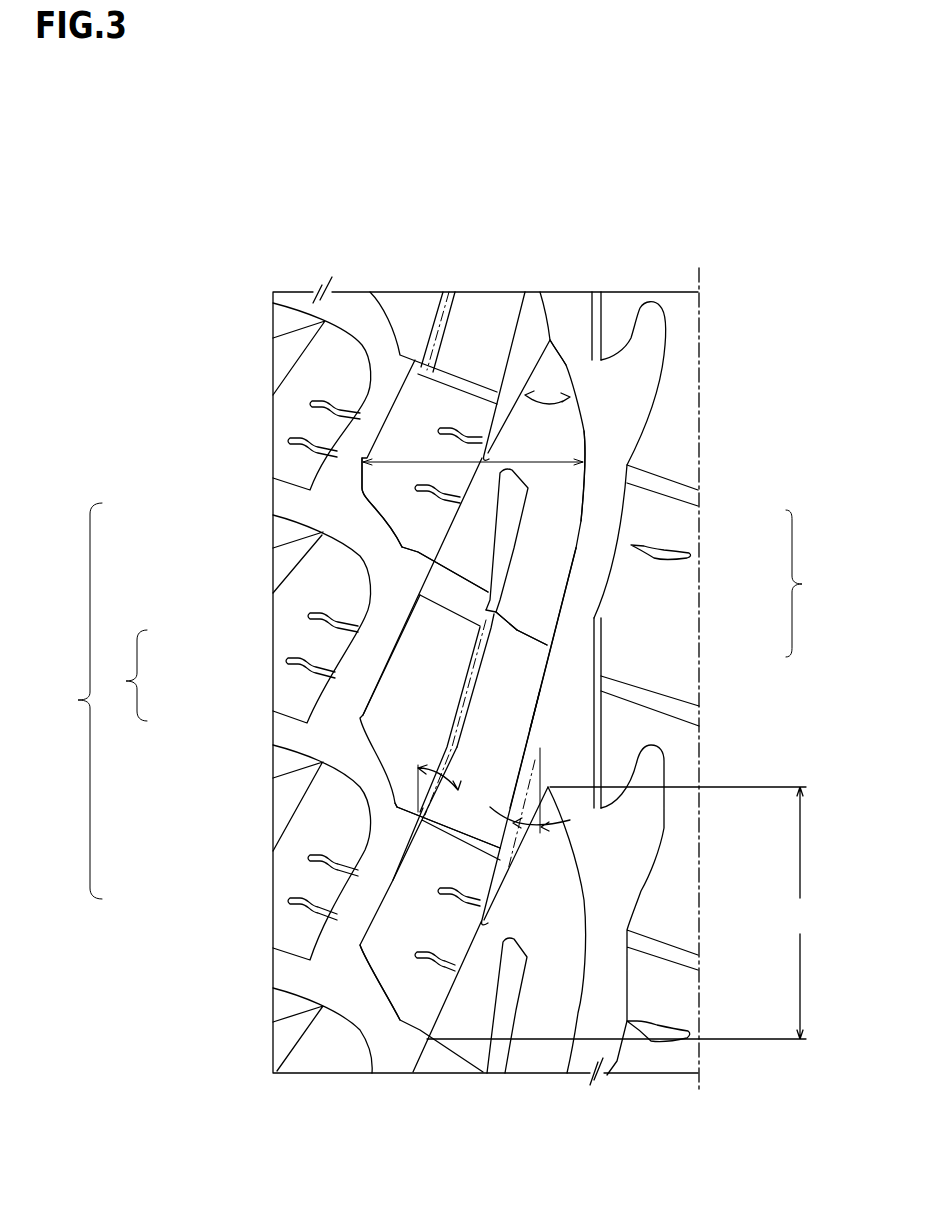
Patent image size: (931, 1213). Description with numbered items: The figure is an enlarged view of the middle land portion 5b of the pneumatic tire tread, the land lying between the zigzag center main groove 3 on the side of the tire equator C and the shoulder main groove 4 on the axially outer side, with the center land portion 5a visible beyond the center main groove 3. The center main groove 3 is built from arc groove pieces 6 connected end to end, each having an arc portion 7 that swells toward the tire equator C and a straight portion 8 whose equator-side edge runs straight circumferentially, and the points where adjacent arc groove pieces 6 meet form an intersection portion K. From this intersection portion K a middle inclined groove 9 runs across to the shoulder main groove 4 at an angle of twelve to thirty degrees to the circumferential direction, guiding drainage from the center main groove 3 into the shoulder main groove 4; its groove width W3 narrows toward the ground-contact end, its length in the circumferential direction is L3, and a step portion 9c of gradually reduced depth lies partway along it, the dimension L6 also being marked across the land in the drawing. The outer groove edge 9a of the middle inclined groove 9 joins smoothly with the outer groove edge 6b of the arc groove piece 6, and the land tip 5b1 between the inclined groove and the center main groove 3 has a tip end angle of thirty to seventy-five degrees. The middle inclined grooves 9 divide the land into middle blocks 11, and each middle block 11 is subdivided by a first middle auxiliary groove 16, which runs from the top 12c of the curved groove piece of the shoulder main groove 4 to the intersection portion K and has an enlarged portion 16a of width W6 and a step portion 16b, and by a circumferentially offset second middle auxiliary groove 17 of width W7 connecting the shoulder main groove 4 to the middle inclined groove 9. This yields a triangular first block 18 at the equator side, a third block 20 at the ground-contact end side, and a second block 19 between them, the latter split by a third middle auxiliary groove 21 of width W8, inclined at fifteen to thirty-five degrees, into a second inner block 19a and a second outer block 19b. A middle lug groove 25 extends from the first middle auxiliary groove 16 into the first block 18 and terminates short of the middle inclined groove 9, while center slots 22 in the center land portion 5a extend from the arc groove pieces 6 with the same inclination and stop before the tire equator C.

The center main groove 3 is at (592, 326).
The shoulder main groove 4 is at (345, 298).
The center land portion 5a is at (649, 274).
The middle land portion 5b is at (451, 274).
The tip end 5b1 is at (548, 333).
The arc groove piece 6 is at (801, 583).
The groove edge of arc groove piece 6b is at (523, 740).
The arc portion 7 is at (604, 528).
The straight portion 8 is at (577, 658).
The middle inclined groove 9 is at (520, 327).
The groove edge of middle inclined groove 9a is at (503, 763).
The step portion 9c is at (470, 441).
The middle block 11 is at (75, 701).
The top of curved groove piece 12c is at (417, 570).
The first middle auxiliary groove 16 is at (486, 593).
The enlarged portion 16a is at (517, 615).
The step portion 16b is at (534, 645).
The second middle auxiliary groove 17 is at (455, 835).
The first block 18 is at (417, 523).
The second block 19 is at (295, 714).
The second inner block 19a is at (483, 763).
The second outer block 19b is at (420, 665).
The third block 20 is at (397, 955).
The third middle auxiliary groove 21 is at (601, 676).
The center slot 22 is at (651, 328).
The middle lug groove 25 is at (517, 518).
The tire equator C is at (698, 665).
The intersection portion K is at (523, 718).
The length of middle inclined groove L3 is at (621, 913).
The length L6 is at (483, 465).
The groove width of middle inclined groove W3 is at (538, 363).
The groove width of first middle auxiliary groove W6 is at (462, 565).
The groove width of second middle auxiliary groove W7 is at (454, 817).
The groove width of third middle auxiliary groove W8 is at (496, 671).